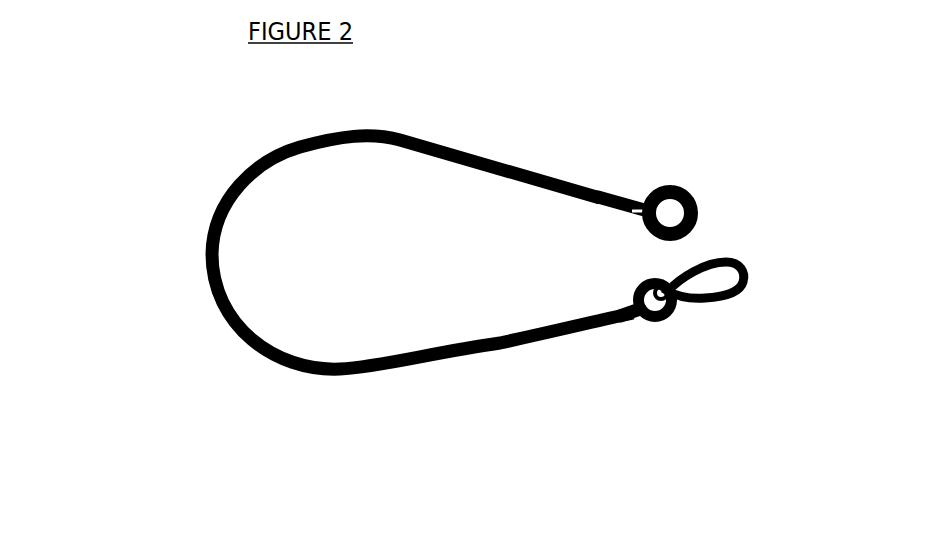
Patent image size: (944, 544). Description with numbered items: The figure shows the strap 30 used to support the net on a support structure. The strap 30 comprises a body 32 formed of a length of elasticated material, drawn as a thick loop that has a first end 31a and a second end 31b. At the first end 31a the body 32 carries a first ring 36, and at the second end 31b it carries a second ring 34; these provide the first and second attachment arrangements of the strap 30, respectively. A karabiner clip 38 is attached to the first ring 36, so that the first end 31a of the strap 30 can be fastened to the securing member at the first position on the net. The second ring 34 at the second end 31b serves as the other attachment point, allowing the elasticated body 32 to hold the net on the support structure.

The strap 30 is at (215, 176).
The body 32 is at (423, 138).
The first end 31a is at (625, 326).
The second end 31b is at (625, 190).
The second ring 34 is at (661, 186).
The first ring 36 is at (640, 314).
The karabiner clip 38 is at (747, 268).